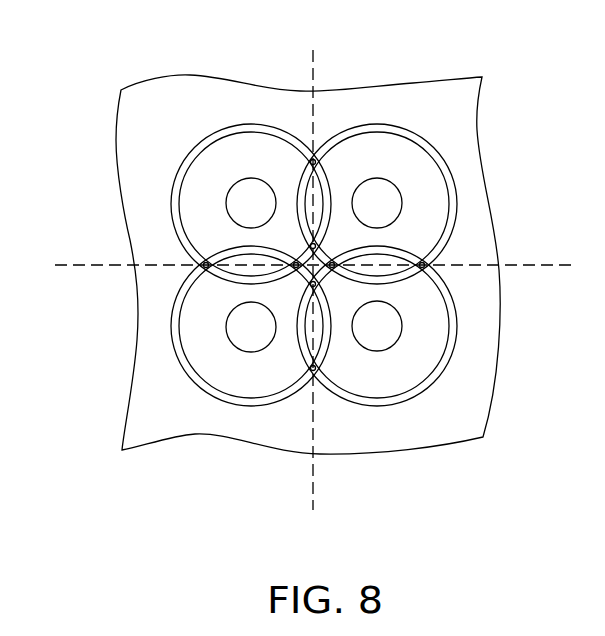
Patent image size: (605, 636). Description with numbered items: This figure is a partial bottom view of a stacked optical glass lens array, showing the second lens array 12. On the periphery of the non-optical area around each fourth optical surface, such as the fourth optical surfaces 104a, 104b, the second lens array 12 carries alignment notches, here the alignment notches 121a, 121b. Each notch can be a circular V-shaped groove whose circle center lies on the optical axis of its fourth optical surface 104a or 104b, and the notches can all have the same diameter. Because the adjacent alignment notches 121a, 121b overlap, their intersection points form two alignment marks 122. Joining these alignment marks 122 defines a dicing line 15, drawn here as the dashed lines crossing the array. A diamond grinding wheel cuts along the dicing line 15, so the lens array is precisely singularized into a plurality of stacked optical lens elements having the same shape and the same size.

The second lens array 12 is at (143, 133).
The dicing line 15 is at (302, 265).
The fourth optical surface 104a is at (400, 330).
The fourth optical surface 104b is at (400, 190).
The alignment notch 121a is at (453, 302).
The alignment notch 121b is at (458, 218).
The alignment mark 122 is at (422, 264).